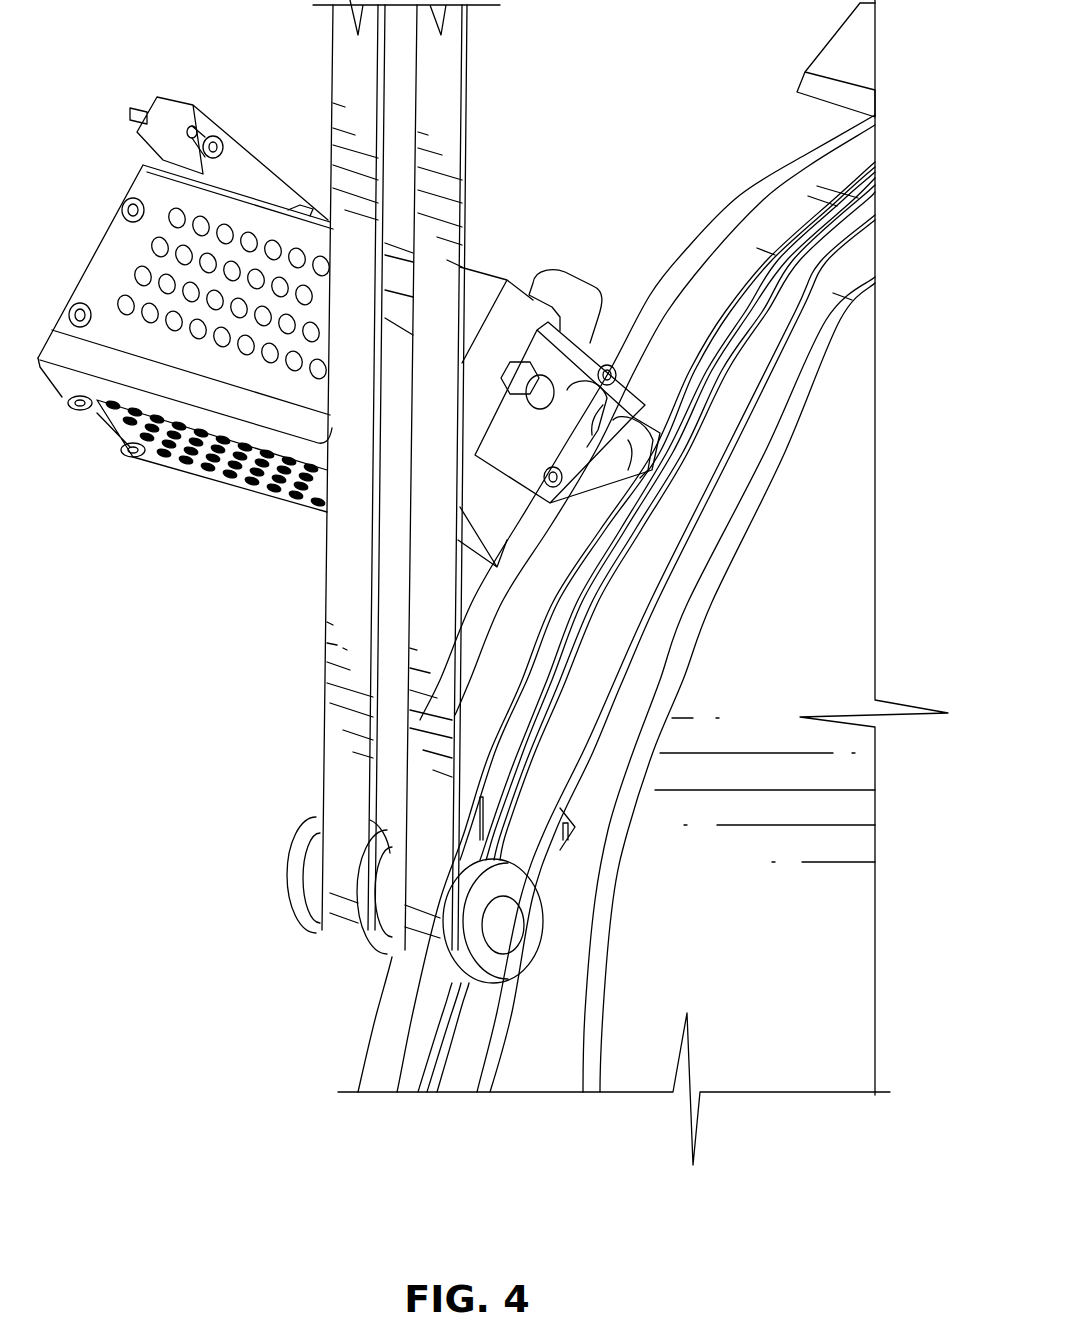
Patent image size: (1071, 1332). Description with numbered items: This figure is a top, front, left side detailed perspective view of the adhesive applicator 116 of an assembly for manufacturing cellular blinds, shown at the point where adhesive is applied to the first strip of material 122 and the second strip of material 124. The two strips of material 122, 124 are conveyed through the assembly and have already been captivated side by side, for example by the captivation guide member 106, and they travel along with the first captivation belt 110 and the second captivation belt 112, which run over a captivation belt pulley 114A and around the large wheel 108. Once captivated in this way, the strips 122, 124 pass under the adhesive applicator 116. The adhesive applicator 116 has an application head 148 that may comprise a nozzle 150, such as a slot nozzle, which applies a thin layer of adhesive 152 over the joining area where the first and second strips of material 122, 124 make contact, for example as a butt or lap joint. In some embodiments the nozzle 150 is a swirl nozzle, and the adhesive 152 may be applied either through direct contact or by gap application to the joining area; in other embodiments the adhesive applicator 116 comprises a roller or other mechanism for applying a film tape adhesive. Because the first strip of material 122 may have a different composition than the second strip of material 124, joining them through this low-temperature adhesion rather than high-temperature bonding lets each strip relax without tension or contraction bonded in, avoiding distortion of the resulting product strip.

The captivation guide member 106 is at (407, 997).
The large wheel 108 is at (763, 965).
The first captivation belt 110 is at (712, 272).
The second captivation belt 112 is at (822, 315).
The captivation belt pulley 114A is at (295, 898).
The adhesive applicator 116 is at (198, 468).
The first strip of material 122 is at (417, 1057).
The second strip of material 124 is at (442, 1065).
The application head 148 is at (611, 326).
The nozzle 150 is at (650, 460).
The adhesive 152 is at (660, 453).